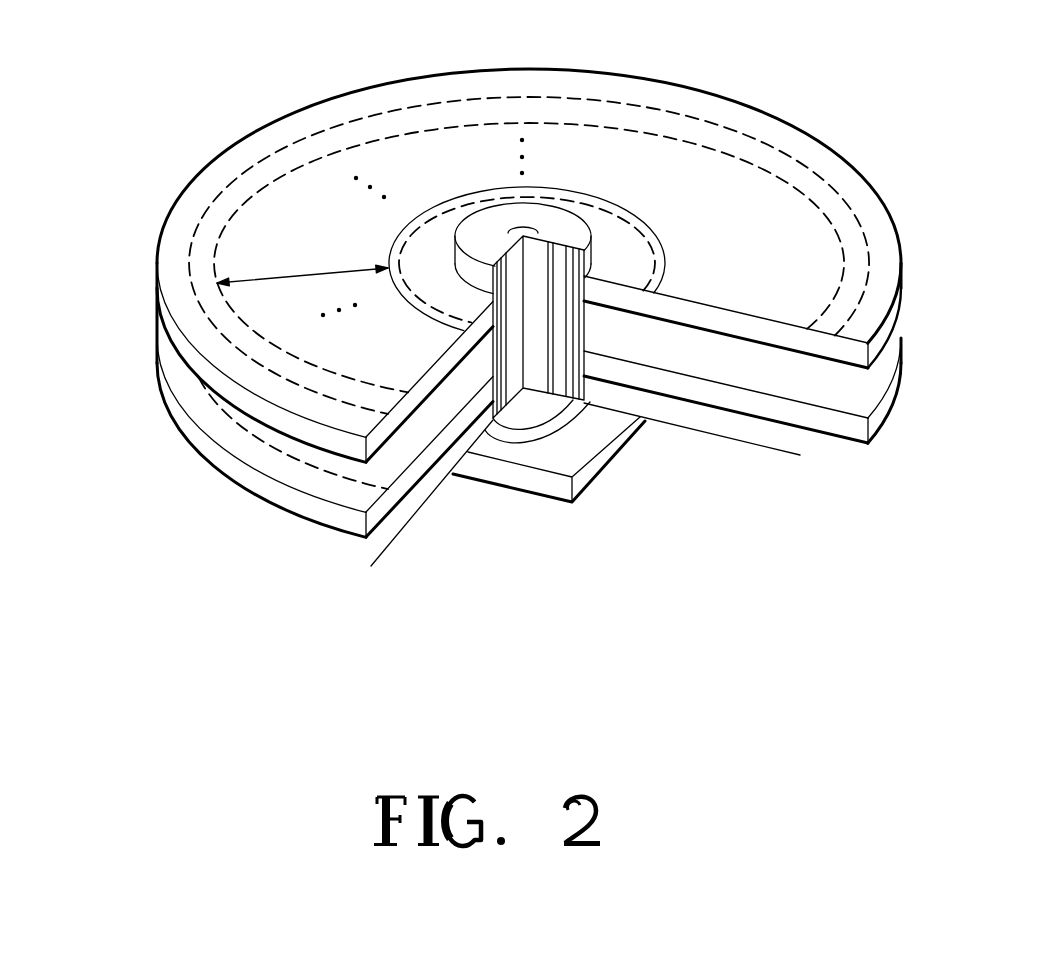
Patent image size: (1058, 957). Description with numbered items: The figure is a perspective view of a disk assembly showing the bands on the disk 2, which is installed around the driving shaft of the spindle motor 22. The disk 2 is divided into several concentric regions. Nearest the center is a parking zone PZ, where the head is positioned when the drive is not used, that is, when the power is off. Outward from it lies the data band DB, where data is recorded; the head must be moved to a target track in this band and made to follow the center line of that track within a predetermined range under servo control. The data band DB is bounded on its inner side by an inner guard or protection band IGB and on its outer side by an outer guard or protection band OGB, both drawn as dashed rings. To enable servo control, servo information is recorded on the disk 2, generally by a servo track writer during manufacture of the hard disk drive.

The disk 2 is at (782, 118).
The spindle motor 22 is at (535, 482).
The outer guard band OGB is at (190, 256).
The inner guard band IGB is at (457, 203).
The parking zone PZ is at (527, 259).
The data band DB is at (302, 263).